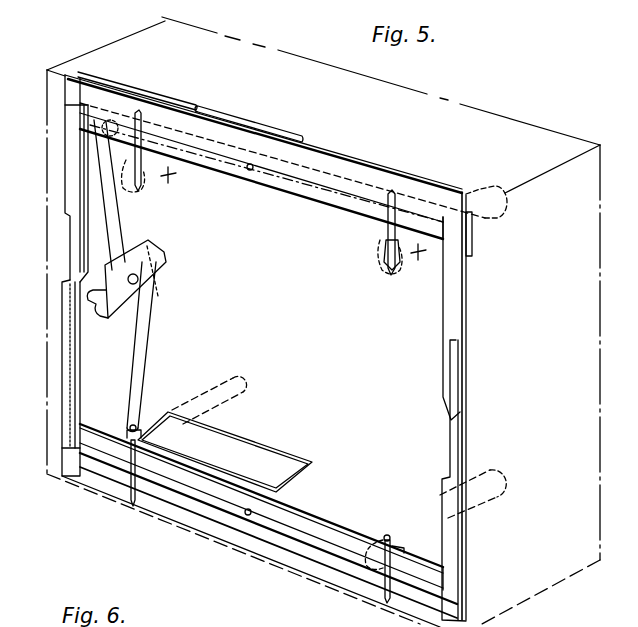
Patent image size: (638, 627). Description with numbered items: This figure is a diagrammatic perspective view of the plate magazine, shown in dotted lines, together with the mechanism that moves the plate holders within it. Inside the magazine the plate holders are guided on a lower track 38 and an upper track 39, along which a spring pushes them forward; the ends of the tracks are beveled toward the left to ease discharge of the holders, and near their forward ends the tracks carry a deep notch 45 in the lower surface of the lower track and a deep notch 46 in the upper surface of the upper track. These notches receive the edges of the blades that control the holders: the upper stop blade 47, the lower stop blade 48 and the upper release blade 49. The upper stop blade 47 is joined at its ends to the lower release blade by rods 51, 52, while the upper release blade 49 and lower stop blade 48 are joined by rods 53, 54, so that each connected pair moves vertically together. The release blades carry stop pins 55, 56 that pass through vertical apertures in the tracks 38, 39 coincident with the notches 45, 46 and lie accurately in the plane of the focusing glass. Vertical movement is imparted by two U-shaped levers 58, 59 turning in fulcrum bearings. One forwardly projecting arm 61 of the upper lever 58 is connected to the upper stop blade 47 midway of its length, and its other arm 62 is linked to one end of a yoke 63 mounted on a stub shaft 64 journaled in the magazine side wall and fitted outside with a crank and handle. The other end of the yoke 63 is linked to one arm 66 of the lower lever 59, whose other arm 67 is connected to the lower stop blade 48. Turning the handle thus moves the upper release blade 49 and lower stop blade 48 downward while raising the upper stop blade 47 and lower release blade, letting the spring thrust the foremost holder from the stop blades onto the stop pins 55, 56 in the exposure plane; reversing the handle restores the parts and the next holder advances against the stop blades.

The lower track 38 is at (217, 412).
The upper track 39 is at (299, 226).
The notch 45 is at (141, 443).
The notch 46 is at (400, 262).
The upper stop blade 47 is at (473, 252).
The lower stop blade 48 is at (445, 572).
The upper release blade 49 is at (420, 190).
The rod 51 is at (461, 361).
The rod 52 is at (65, 353).
The rod 53 is at (453, 323).
The rod 54 is at (65, 212).
The stop pin 55 is at (125, 187).
The stop pin 56 is at (132, 472).
The upper U-shaped lever 58 is at (288, 133).
The lower U-shaped lever 59 is at (225, 452).
The forwardly projecting arm 61 is at (250, 171).
The arm 62 is at (182, 103).
The yoke 63 is at (138, 255).
The stub shaft 64 is at (138, 279).
The arm 66 is at (143, 414).
The arm 67 is at (297, 486).